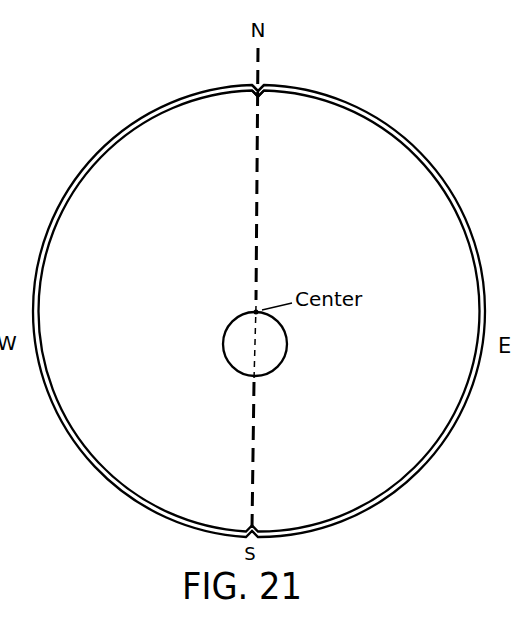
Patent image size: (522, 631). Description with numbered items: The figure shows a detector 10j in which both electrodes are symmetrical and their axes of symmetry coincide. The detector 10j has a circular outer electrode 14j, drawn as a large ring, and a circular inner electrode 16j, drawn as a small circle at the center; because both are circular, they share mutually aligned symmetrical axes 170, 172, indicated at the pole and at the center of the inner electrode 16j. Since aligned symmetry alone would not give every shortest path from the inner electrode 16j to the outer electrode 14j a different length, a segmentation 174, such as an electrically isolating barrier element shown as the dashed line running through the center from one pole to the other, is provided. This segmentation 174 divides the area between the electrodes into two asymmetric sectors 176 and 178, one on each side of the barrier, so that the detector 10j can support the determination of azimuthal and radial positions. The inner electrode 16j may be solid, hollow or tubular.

The detector 10j is at (259, 288).
The outer electrode 14j is at (422, 155).
The inner electrode 16j is at (231, 323).
The symmetrical axis 170 is at (258, 68).
The symmetrical axis 172 is at (255, 351).
The segmentation 174 is at (256, 173).
The asymmetric sector 176 is at (158, 264).
The asymmetric sector 178 is at (378, 244).